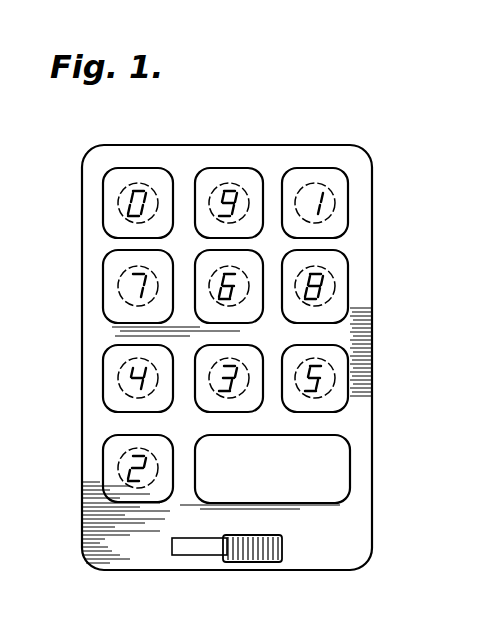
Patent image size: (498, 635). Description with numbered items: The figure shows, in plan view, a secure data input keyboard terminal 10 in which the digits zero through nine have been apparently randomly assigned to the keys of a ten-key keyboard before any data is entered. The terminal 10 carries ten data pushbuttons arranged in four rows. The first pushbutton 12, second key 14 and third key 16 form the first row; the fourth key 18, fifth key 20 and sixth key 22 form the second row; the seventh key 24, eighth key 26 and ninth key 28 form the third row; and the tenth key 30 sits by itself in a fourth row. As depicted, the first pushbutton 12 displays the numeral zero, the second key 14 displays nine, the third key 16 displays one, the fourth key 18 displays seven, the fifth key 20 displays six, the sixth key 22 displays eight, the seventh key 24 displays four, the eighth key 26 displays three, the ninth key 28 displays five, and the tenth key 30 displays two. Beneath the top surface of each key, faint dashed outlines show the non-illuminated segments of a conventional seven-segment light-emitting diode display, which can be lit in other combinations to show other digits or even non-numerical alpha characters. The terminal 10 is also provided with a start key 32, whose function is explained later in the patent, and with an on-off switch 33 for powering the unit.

The secure data input keyboard terminal 10 is at (360, 160).
The first pushbutton 12 is at (110, 181).
The second key 14 is at (250, 172).
The third key 16 is at (340, 226).
The fourth key 18 is at (110, 260).
The fifth key 20 is at (258, 248).
The sixth key 22 is at (340, 318).
The seventh key 24 is at (110, 352).
The eighth key 26 is at (205, 406).
The ninth key 28 is at (340, 404).
The tenth key 30 is at (107, 500).
The start key 32 is at (340, 496).
The on-off switch 33 is at (252, 562).